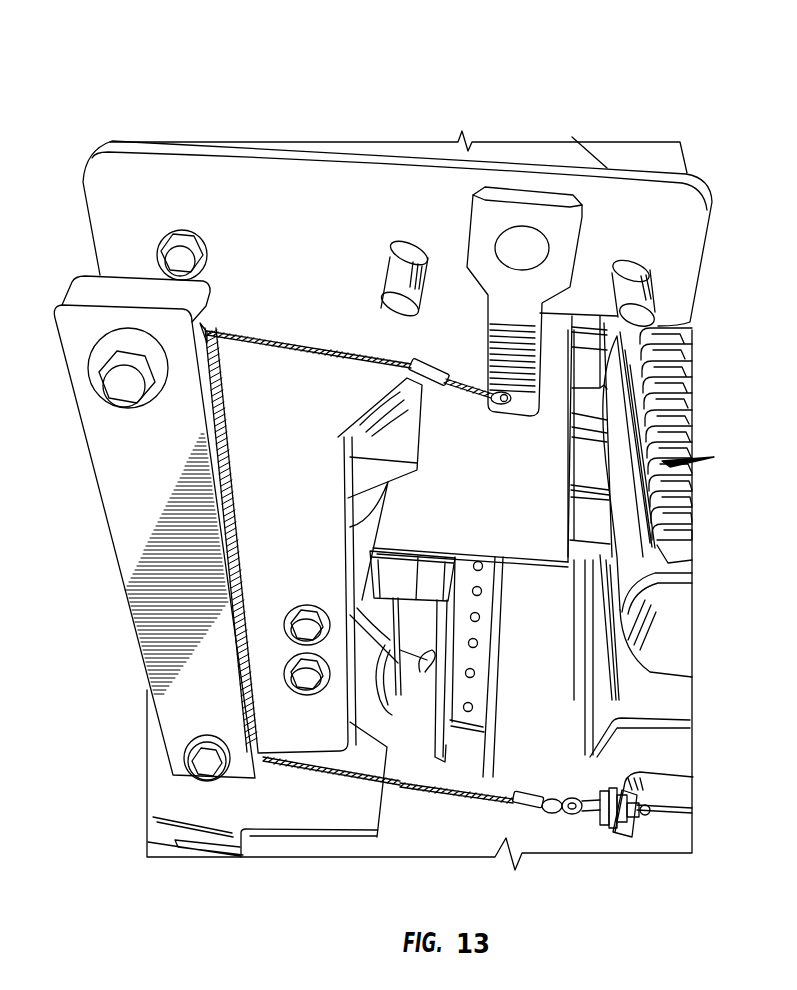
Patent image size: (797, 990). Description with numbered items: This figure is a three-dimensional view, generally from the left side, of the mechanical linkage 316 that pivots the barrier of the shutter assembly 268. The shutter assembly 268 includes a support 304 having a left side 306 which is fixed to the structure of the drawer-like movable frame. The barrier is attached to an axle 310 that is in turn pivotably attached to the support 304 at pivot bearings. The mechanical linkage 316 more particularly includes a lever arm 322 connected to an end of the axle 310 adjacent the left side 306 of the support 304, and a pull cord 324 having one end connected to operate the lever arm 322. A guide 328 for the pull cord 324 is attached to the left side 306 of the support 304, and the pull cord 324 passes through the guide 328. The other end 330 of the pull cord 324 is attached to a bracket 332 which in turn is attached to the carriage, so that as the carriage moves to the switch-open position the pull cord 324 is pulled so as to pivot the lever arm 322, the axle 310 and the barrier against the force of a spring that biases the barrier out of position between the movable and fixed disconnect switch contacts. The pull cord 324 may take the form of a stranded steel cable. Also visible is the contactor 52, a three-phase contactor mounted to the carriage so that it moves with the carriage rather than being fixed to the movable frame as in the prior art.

The shutter assembly 268 is at (139, 66).
The support 304 is at (375, 100).
The axle 310 is at (524, 240).
The lever arm 322 is at (430, 360).
The pull cord 324 is at (316, 350).
The guide 328 is at (137, 462).
The left side 306 is at (280, 537).
The contactor 52 is at (672, 623).
The mechanical linkage 316 is at (187, 794).
The other end of the pull cord 330 is at (356, 774).
The bracket 332 is at (668, 793).